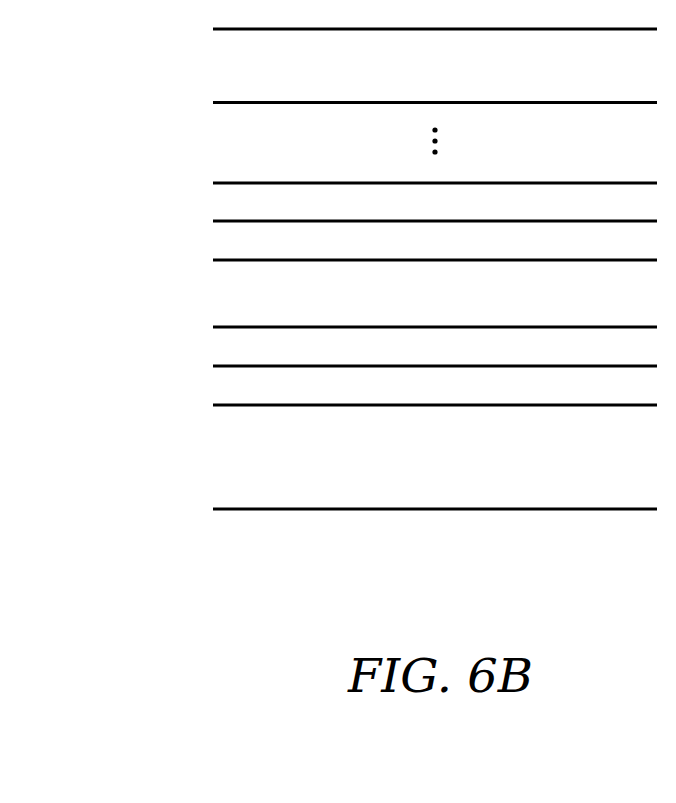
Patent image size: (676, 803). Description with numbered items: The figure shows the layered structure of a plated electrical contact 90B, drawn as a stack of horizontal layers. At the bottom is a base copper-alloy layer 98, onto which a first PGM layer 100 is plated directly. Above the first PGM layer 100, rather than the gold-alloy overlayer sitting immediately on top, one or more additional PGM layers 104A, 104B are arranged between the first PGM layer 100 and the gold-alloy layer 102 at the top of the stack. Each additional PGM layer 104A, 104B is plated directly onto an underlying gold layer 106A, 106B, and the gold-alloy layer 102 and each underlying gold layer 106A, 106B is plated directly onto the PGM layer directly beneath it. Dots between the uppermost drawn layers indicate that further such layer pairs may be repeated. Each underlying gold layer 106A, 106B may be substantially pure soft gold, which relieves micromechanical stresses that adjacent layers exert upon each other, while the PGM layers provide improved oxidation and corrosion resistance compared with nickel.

The plated contact 90B is at (158, 491).
The base copper-alloy layer 98 is at (446, 466).
The PGM layer 100 is at (452, 398).
The gold-alloy layer 102 is at (452, 76).
The additional PGM layer 104A is at (458, 302).
The additional PGM layer 104B is at (458, 212).
The underlying gold layer 106A is at (458, 357).
The underlying gold layer 106B is at (458, 252).